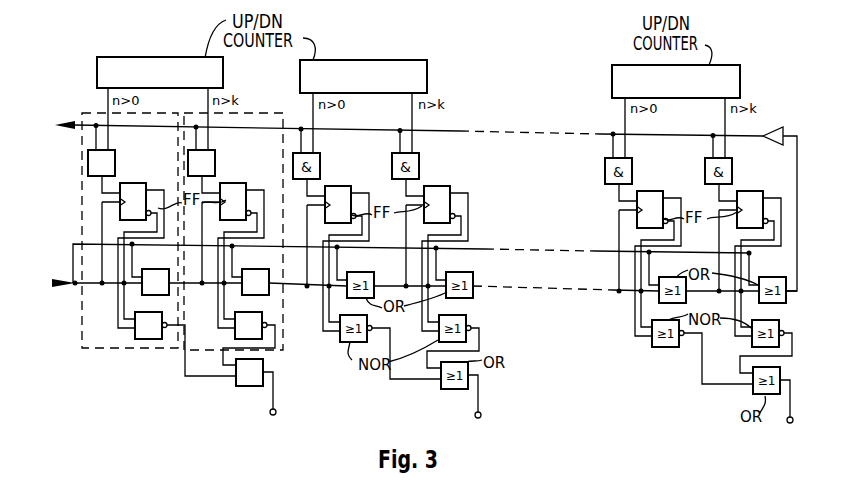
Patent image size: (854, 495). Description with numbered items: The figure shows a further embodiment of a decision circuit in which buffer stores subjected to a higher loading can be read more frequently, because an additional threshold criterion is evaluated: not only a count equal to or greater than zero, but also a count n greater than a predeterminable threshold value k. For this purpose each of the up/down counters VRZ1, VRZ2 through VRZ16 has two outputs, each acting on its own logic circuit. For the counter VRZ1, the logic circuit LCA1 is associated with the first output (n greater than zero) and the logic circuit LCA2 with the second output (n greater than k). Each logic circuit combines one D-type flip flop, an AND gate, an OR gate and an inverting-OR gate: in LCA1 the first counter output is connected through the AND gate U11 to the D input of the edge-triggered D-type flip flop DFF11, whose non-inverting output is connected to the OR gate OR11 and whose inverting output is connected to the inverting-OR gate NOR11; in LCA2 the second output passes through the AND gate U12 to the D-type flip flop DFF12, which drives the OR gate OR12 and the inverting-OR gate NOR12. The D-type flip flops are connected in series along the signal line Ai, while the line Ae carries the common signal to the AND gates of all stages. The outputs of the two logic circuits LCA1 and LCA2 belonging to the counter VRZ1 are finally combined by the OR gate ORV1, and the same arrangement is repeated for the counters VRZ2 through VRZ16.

The up/down counter VRZ1 is at (160, 72).
The up/down counter VRZ2 is at (363, 76).
The up/down counter VRZ16 is at (676, 81).
The AND gate U11 is at (118, 161).
The AND gate U12 is at (218, 161).
The D-type flip flop DFF11 is at (142, 191).
The D-type flip flop DFF12 is at (242, 191).
The OR gate OR11 is at (158, 273).
The OR gate OR12 is at (258, 273).
The NOR gate NOR11 is at (153, 340).
The NOR gate NOR12 is at (270, 340).
The OR gate ORV1 is at (252, 387).
The logic circuit LCA1 is at (112, 340).
The logic circuit LCA2 is at (203, 340).
The enable/output signal line Ae is at (426, 193).
The input signal line Ai is at (424, 267).